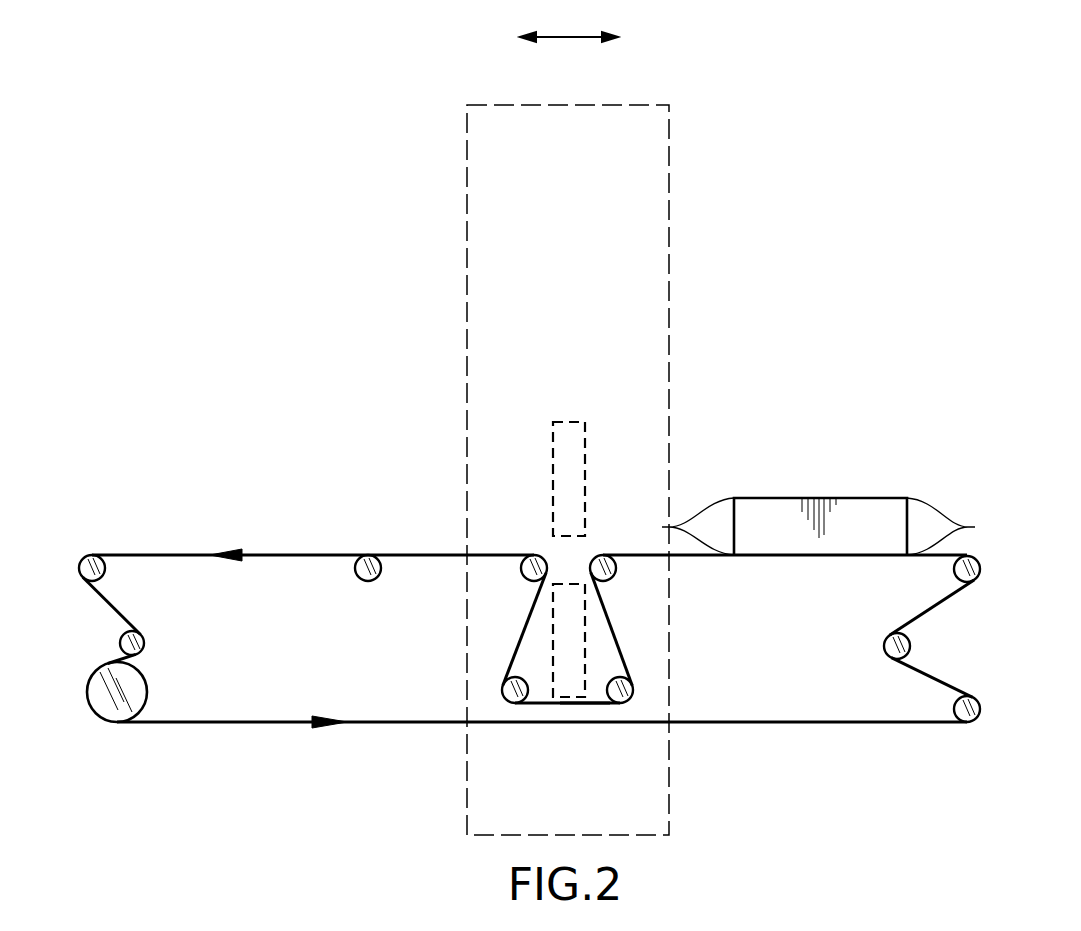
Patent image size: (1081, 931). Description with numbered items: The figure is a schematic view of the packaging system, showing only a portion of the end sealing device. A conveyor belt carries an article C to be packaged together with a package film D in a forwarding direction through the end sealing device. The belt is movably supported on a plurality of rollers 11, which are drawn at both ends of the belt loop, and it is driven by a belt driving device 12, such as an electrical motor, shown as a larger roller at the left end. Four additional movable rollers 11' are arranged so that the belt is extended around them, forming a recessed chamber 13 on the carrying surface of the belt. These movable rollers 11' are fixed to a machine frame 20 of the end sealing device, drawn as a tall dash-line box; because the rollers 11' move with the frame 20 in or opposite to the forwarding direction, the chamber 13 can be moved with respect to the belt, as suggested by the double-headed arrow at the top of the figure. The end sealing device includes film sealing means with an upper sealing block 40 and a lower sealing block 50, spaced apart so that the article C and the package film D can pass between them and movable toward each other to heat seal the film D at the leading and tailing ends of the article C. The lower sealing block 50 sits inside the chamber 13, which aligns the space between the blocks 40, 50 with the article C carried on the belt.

The rollers 11 is at (531, 609).
The movable rollers 11' is at (568, 633).
The belt driving device 12 is at (108, 700).
The recessed chamber 13 is at (593, 698).
The machine frame 20 is at (468, 328).
The upper sealing block 40 is at (565, 432).
The lower sealing block 50 is at (562, 693).
The article C is at (816, 528).
The package film D is at (938, 521).